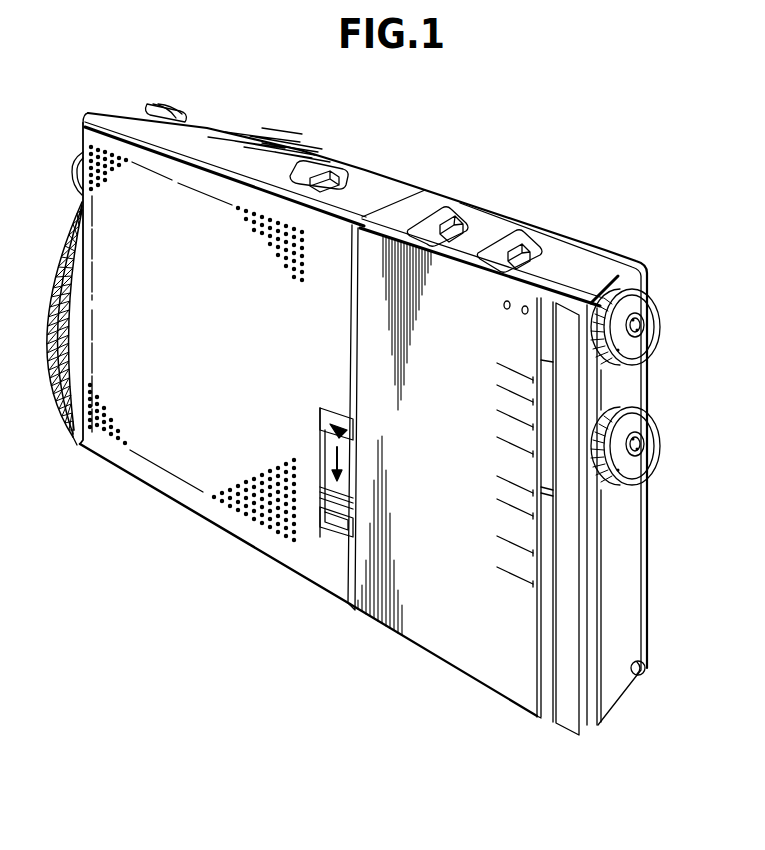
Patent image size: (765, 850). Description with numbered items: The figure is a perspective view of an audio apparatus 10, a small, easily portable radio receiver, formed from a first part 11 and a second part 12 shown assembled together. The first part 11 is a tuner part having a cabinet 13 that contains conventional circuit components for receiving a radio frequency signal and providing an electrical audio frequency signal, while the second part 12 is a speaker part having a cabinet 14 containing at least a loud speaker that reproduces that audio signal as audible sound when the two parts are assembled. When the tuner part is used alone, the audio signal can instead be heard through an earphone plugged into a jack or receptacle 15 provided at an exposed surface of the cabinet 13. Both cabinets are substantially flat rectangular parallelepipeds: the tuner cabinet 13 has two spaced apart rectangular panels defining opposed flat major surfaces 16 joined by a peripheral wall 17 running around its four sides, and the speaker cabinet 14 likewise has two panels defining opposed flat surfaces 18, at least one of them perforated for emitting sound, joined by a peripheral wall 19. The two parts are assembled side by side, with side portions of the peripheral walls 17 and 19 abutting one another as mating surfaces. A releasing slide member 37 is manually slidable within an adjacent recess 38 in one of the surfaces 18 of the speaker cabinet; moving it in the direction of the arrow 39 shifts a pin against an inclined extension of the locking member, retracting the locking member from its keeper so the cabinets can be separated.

The audio apparatus 10 is at (518, 146).
The first part 11 is at (601, 210).
The second part 12 is at (287, 102).
The cabinet 13 is at (603, 240).
The cabinet 14 is at (285, 139).
The jack or receptacle 15 is at (646, 676).
The major surfaces 16 is at (427, 596).
The peripheral wall 17 is at (636, 545).
The flat surfaces 18 is at (178, 437).
The peripheral wall 19 is at (207, 127).
The releasing slide member 37 is at (322, 421).
The recess 38 is at (330, 532).
The arrow 39 is at (327, 447).